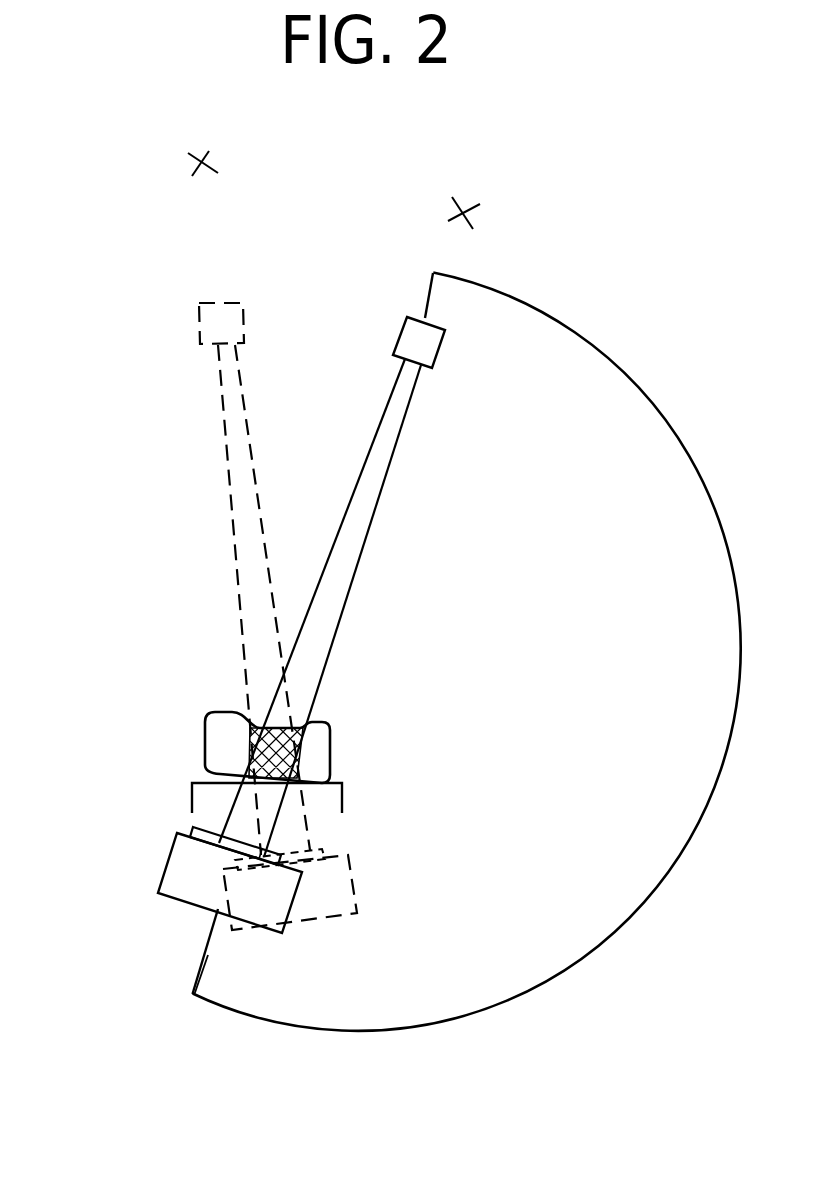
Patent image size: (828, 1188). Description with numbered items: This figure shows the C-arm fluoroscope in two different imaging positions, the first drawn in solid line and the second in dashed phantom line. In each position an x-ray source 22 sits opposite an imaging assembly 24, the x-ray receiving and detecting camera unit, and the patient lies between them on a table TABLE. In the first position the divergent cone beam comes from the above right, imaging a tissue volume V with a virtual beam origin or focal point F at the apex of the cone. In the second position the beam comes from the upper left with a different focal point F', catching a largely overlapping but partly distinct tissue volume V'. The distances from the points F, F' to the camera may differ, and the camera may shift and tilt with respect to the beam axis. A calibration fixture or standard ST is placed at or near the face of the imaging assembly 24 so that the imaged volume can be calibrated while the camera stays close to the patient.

The x-ray source 22 is at (402, 337).
The imaging assembly 24 is at (170, 857).
The focal point F is at (484, 214).
The focal point F' is at (226, 162).
The tissue volume V is at (314, 753).
The tissue volume V' is at (262, 718).
The standard ST is at (192, 833).
The table TABLE is at (190, 783).